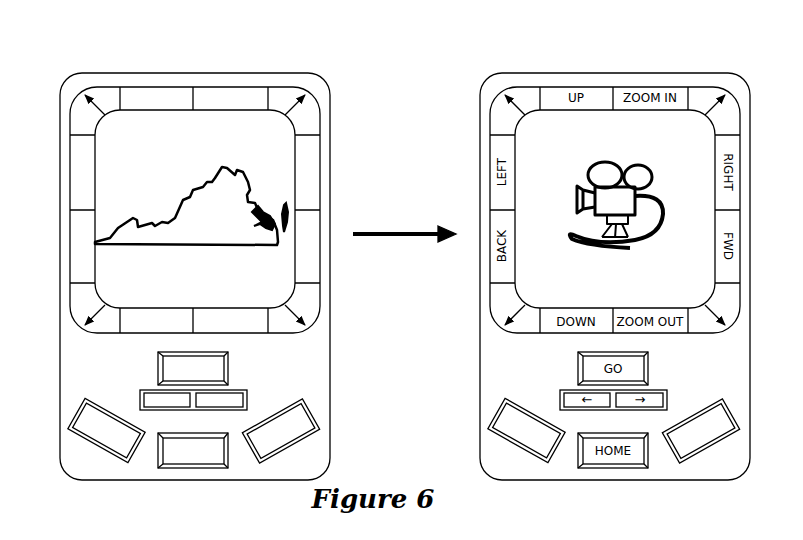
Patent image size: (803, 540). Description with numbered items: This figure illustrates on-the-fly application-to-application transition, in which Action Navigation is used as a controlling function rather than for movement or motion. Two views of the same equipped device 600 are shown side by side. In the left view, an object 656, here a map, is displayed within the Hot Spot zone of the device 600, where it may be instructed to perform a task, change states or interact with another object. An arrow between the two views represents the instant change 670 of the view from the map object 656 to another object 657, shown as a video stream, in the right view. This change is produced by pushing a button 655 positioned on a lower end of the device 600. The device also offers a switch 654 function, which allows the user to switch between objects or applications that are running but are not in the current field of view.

The equipped device 600 is at (70, 50).
The switch function 654 is at (247, 394).
The button 655 is at (327, 428).
The object 656 is at (183, 195).
The another object 657 is at (588, 172).
The instant change 670 is at (390, 237).